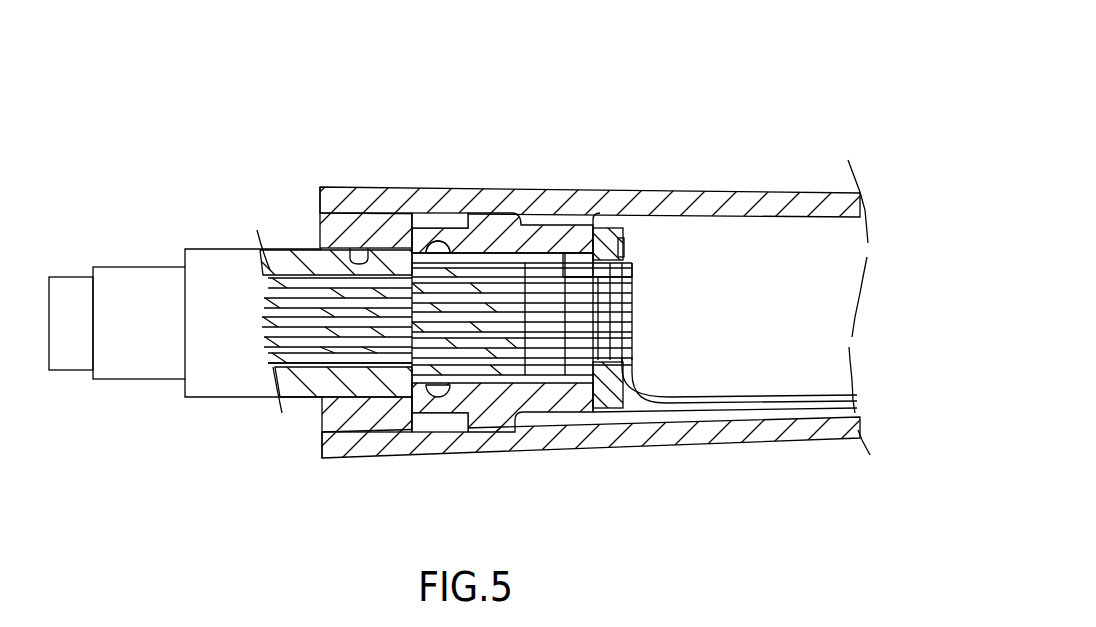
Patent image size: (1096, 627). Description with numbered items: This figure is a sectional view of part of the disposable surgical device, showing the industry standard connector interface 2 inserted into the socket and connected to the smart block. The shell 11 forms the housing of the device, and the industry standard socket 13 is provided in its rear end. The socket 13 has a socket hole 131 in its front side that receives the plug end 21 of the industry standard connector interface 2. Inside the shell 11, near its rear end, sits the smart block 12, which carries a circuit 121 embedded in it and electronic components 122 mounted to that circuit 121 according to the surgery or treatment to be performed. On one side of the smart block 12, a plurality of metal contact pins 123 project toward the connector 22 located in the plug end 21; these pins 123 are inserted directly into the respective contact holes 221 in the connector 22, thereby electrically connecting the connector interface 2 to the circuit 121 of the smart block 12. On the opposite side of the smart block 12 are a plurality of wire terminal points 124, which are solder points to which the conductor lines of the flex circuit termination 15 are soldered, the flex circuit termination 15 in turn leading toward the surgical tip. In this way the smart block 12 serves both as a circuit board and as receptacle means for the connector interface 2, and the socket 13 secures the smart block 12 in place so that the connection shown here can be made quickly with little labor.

The shell 11 is at (712, 197).
The smart block 12 is at (598, 229).
The circuit 121 is at (562, 255).
The electronic components 122 is at (623, 237).
The metal contact pins 123 is at (443, 283).
The wire terminal points 124 is at (632, 280).
The industry standard socket 13 is at (380, 224).
The socket hole 131 is at (350, 256).
The flex circuit termination 15 is at (792, 403).
The industry standard connector interface 2 is at (298, 260).
The plug end 21 is at (467, 262).
The connector 22 is at (465, 367).
The contact holes 221 is at (362, 360).